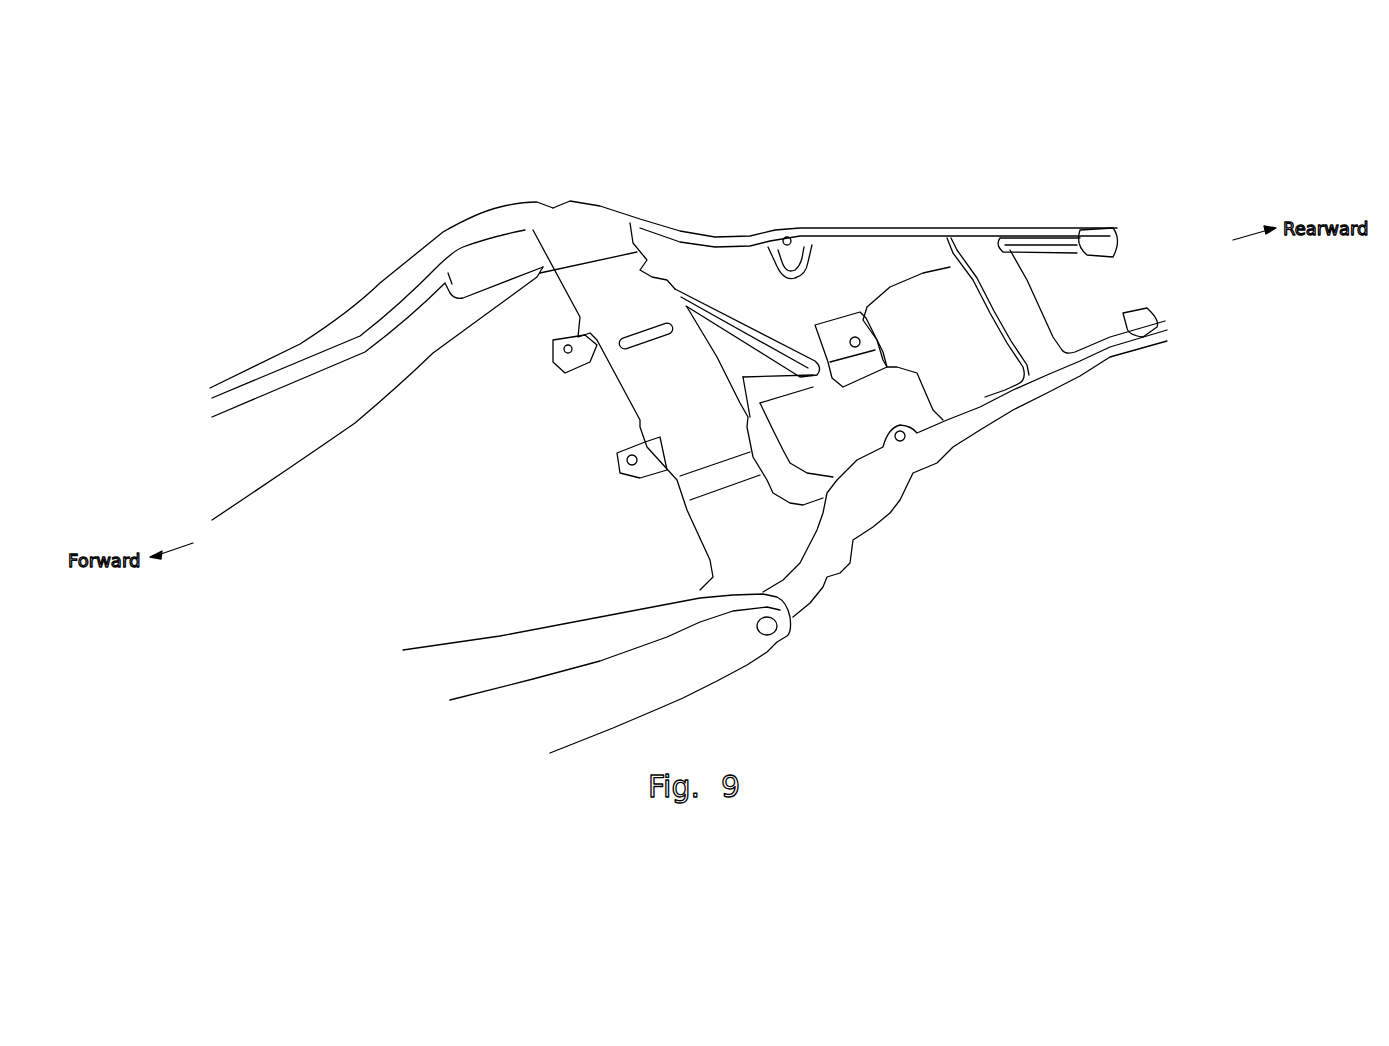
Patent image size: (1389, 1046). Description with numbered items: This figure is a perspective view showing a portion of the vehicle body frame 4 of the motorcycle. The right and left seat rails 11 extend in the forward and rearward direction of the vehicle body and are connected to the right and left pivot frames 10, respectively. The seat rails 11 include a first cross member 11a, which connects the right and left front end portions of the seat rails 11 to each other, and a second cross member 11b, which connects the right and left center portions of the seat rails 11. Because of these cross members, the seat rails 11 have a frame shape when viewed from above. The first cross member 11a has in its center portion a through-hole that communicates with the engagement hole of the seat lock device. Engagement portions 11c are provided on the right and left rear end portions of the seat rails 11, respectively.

The vehicle body frame 4 is at (722, 436).
The pivot frame 10 is at (292, 343).
The seat rail 11 is at (847, 227).
The first cross member 11a is at (642, 285).
The second cross member 11b is at (1013, 295).
The engagement portion 11c is at (1113, 255).